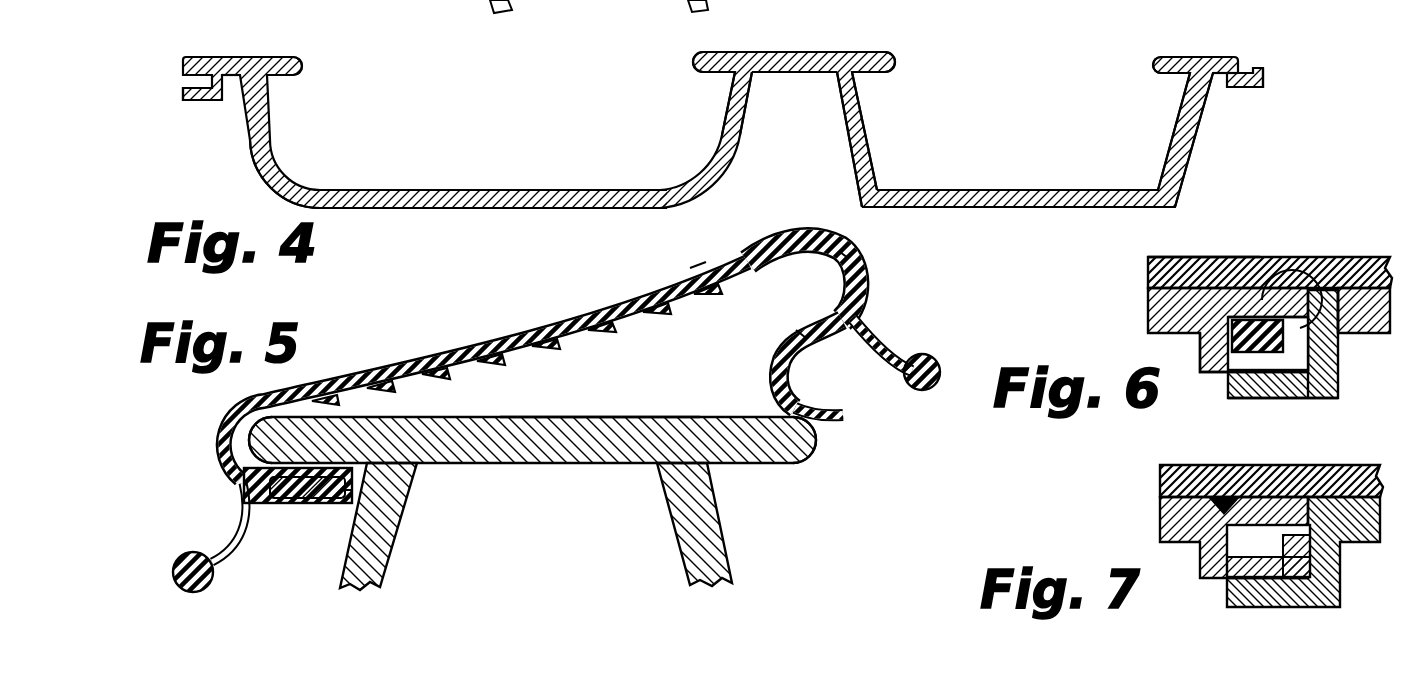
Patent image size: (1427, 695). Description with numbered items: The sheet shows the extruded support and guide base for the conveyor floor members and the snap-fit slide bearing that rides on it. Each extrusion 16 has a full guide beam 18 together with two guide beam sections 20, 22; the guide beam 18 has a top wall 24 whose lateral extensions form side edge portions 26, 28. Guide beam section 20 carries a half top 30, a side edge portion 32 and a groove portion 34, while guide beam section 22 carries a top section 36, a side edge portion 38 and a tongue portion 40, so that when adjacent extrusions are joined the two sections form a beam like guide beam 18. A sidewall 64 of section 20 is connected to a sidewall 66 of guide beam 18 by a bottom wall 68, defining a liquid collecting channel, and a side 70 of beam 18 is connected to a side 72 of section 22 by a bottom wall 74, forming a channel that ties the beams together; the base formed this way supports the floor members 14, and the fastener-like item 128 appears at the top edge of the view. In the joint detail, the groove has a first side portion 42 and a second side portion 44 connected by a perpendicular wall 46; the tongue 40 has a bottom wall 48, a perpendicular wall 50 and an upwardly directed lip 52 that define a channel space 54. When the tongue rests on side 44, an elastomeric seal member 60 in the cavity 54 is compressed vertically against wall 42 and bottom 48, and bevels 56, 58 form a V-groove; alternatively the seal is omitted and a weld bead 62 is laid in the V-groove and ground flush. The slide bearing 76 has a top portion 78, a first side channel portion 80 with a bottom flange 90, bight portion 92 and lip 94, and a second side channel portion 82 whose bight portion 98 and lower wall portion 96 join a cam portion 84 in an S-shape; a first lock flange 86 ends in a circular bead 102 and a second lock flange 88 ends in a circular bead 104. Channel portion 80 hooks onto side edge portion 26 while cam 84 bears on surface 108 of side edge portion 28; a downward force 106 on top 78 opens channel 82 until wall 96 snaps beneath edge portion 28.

In FIG. 4, the left channel section 14 is at (520, 185).
In FIG. 4, the extrusion 16 is at (470, 225).
In FIG. 4, the guide beam 18 is at (858, 50).
In FIG. 5, the guide beam 18 is at (783, 513).
In FIG. 4, the guide beam section 20 is at (285, 50).
In FIG. 4, the guide beam section 22 is at (1150, 60).
In FIG. 4, the top wall 24 is at (795, 52).
In FIG. 5, the top wall 24 is at (530, 425).
In FIG. 4, the side edge portion 26 is at (695, 73).
In FIG. 5, the side edge portion 26 is at (235, 425).
In FIG. 4, the side edge portion 28 is at (895, 72).
In FIG. 5, the side edge portion 28 is at (800, 462).
In FIG. 4, the half top 30 is at (249, 57).
In FIG. 4, the side edge portion 32 is at (292, 85).
In FIG. 4, the groove portion 34 is at (185, 92).
In FIG. 6, the groove portion 34 is at (1290, 405).
In FIG. 4, the top section 36 is at (1213, 57).
In FIG. 6, the top section 36 is at (1150, 300).
In FIG. 4, the side edge portion 38 is at (1160, 78).
In FIG. 4, the tongue portion 40 is at (1250, 88).
In FIG. 6, the tongue portion 40 is at (1190, 365).
In FIG. 6, the first side portion 42 is at (1298, 288).
In FIG. 6, the second side portion 44 is at (1250, 400).
In FIG. 6, the perpendicular wall 46 is at (1325, 362).
In FIG. 6, the bottom wall 48 is at (1308, 400).
In FIG. 6, the perpendicular wall 50 is at (1238, 350).
In FIG. 6, the lip 52 is at (1330, 296).
In FIG. 7, the channel space 54 is at (1245, 540).
In FIG. 6, the bevel surface 56 is at (1222, 262).
In FIG. 6, the bevel 58 is at (1226, 283).
In FIG. 6, the seal member 60 is at (1228, 330).
In FIG. 7, the weld bead 62 is at (1165, 482).
In FIG. 4, the sidewall 64 is at (282, 158).
In FIG. 4, the sidewall 66 is at (720, 120).
In FIG. 5, the sidewall 66 is at (362, 550).
In FIG. 4, the bottom wall 68 is at (455, 200).
In FIG. 4, the side 70 is at (865, 140).
In FIG. 5, the side 70 is at (707, 562).
In FIG. 4, the side 72 is at (1178, 138).
In FIG. 4, the bottom wall 74 is at (985, 195).
In FIG. 5, the slide bearing 76 is at (562, 305).
In FIG. 5, the top portion 78 is at (450, 353).
In FIG. 5, the first side channel portion 80 is at (232, 480).
In FIG. 5, the second side channel portion 82 is at (870, 280).
In FIG. 5, the cam portion 84 is at (775, 405).
In FIG. 5, the first lock flange 86 is at (235, 562).
In FIG. 5, the second lock flange 88 is at (915, 400).
In FIG. 5, the bottom flange 90 is at (315, 512).
In FIG. 5, the bight portion 92 is at (225, 452).
In FIG. 5, the lip 94 is at (352, 478).
In FIG. 5, the lower wall portion 96 is at (800, 335).
In FIG. 5, the bight portion 98 is at (845, 255).
In FIG. 5, the circular bead 102 is at (178, 560).
In FIG. 5, the circular bead 104 is at (935, 362).
In FIG. 5, the downward force 106 is at (697, 265).
In FIG. 5, the surface 108 is at (813, 437).
In FIG. 4, the fastener 128 is at (490, 5).